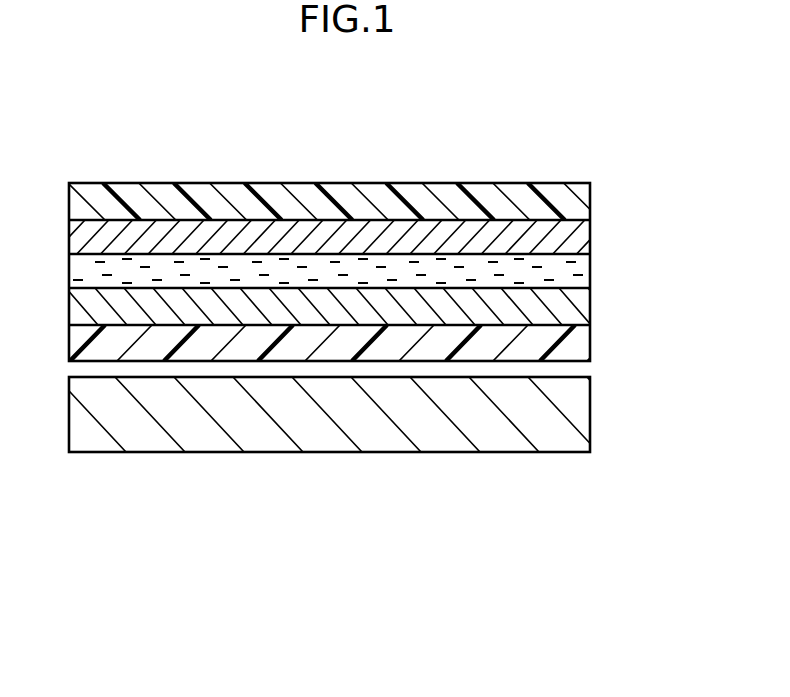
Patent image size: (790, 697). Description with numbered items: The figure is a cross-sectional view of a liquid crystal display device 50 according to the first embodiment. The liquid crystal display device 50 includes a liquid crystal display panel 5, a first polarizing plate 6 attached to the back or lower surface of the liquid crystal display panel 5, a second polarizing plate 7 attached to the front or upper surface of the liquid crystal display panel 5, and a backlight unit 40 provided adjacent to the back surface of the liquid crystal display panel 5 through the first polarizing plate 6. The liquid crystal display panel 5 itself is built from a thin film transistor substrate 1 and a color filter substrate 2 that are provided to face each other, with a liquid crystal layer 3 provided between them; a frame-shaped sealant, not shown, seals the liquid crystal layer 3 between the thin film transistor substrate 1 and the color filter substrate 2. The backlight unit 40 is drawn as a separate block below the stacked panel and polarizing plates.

The liquid crystal display device 50 is at (113, 142).
The second polarizing plate 7 is at (573, 198).
The color filter (CF) substrate 2 is at (573, 235).
The liquid crystal layer 3 is at (573, 270).
The thin film transistor (TFT) substrate 1 is at (362, 306).
The liquid crystal display panel 5 is at (382, 271).
The first polarizing plate 6 is at (573, 342).
The backlight unit 40 is at (573, 403).